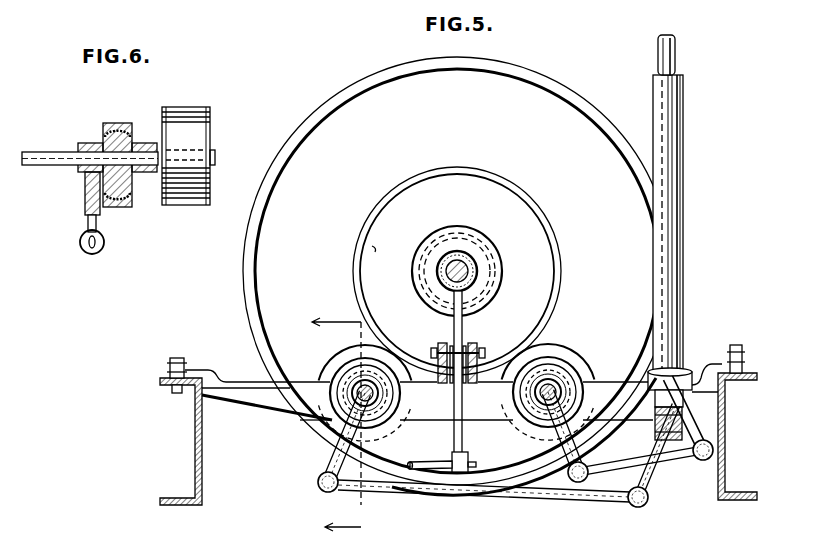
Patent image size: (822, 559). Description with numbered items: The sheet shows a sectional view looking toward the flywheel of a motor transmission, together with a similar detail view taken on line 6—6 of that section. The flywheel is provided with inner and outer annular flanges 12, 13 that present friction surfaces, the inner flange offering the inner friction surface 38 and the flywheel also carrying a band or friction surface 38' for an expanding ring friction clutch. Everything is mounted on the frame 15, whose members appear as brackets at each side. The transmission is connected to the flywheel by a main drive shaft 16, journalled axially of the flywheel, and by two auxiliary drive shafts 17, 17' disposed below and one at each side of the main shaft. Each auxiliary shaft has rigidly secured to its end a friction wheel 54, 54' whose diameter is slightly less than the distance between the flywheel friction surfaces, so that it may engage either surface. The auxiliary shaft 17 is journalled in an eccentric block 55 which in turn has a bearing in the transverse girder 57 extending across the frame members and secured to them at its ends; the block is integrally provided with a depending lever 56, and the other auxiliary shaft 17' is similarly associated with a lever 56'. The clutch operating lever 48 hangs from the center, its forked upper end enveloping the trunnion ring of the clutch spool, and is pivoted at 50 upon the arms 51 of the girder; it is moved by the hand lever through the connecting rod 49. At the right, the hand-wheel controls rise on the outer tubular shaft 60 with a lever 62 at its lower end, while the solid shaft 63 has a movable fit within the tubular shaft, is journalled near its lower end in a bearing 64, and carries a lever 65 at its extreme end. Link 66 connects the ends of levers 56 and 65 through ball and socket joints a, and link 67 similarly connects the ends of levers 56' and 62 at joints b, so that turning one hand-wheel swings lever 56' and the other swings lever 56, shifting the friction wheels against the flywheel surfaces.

In FIG. 5, the inner annular flange 12 is at (489, 182).
In FIG. 5, the outer annular flange 13 is at (548, 84).
In FIG. 5, the frame 15 is at (202, 458).
In FIG. 5, the main drive shaft 16 is at (470, 268).
In FIG. 5, the auxiliary drive shaft 17 is at (333, 375).
In FIG. 6, the auxiliary drive shaft 17 is at (90, 146).
In FIG. 5, the auxiliary drive shaft 17' is at (577, 365).
In FIG. 5, the inner friction surface 38 is at (457, 268).
In FIG. 5, the band or friction surface 38' is at (347, 243).
In FIG. 5, the clutch operating lever 48 is at (465, 450).
In FIG. 5, the connecting rod 49 is at (430, 460).
In FIG. 5, the pivot 50 is at (484, 350).
In FIG. 5, the arms 51 is at (440, 345).
In FIG. 5, the friction wheel 54 is at (363, 386).
In FIG. 6, the friction wheel 54 is at (195, 141).
In FIG. 5, the friction wheel 54' is at (548, 376).
In FIG. 6, the eccentric block 55 is at (140, 142).
In FIG. 5, the depending lever 56 is at (327, 438).
In FIG. 6, the depending lever 56 is at (74, 213).
In FIG. 5, the lever 56' is at (556, 431).
In FIG. 5, the transverse girder 57 is at (231, 380).
In FIG. 6, the transverse girder 57 is at (113, 123).
In FIG. 5, the outer tubular shaft 60 is at (684, 152).
In FIG. 5, the lever 62 is at (684, 405).
In FIG. 5, the solid shaft 63 is at (680, 54).
In FIG. 5, the bearing 64 is at (660, 428).
In FIG. 5, the lever 65 is at (650, 472).
In FIG. 5, the link 66 is at (423, 490).
In FIG. 5, the link 67 is at (632, 468).
In FIG. 5, the section line 6— 6 is at (326, 426).
In FIG. 5, the ball and socket joints a is at (322, 490).
In FIG. 5, the ball and socket joints b is at (577, 483).